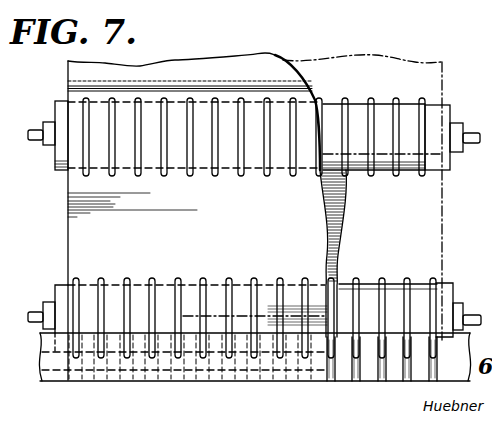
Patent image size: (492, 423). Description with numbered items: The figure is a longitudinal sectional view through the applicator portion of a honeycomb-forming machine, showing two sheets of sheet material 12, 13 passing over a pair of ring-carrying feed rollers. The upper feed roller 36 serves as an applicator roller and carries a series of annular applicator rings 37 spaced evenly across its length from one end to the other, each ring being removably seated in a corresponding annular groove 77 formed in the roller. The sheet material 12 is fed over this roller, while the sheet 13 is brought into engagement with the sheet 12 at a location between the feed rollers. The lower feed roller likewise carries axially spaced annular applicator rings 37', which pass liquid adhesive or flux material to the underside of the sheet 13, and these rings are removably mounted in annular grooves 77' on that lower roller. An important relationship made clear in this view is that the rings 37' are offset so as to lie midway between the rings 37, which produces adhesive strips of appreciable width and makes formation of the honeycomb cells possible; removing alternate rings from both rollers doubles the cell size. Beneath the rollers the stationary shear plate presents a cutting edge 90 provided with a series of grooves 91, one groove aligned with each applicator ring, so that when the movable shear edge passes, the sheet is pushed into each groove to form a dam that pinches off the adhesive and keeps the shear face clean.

The sheet material 12 is at (266, 73).
The sheet material 13 is at (311, 86).
The annular applicator rings 37 is at (234, 121).
The annular grooves 77 is at (254, 140).
The feed roller 36 is at (433, 117).
The annular applicator rings 37' is at (232, 292).
The annular grooves 77' is at (254, 304).
The cutting edge 90 is at (458, 381).
The grooves 91 is at (381, 381).